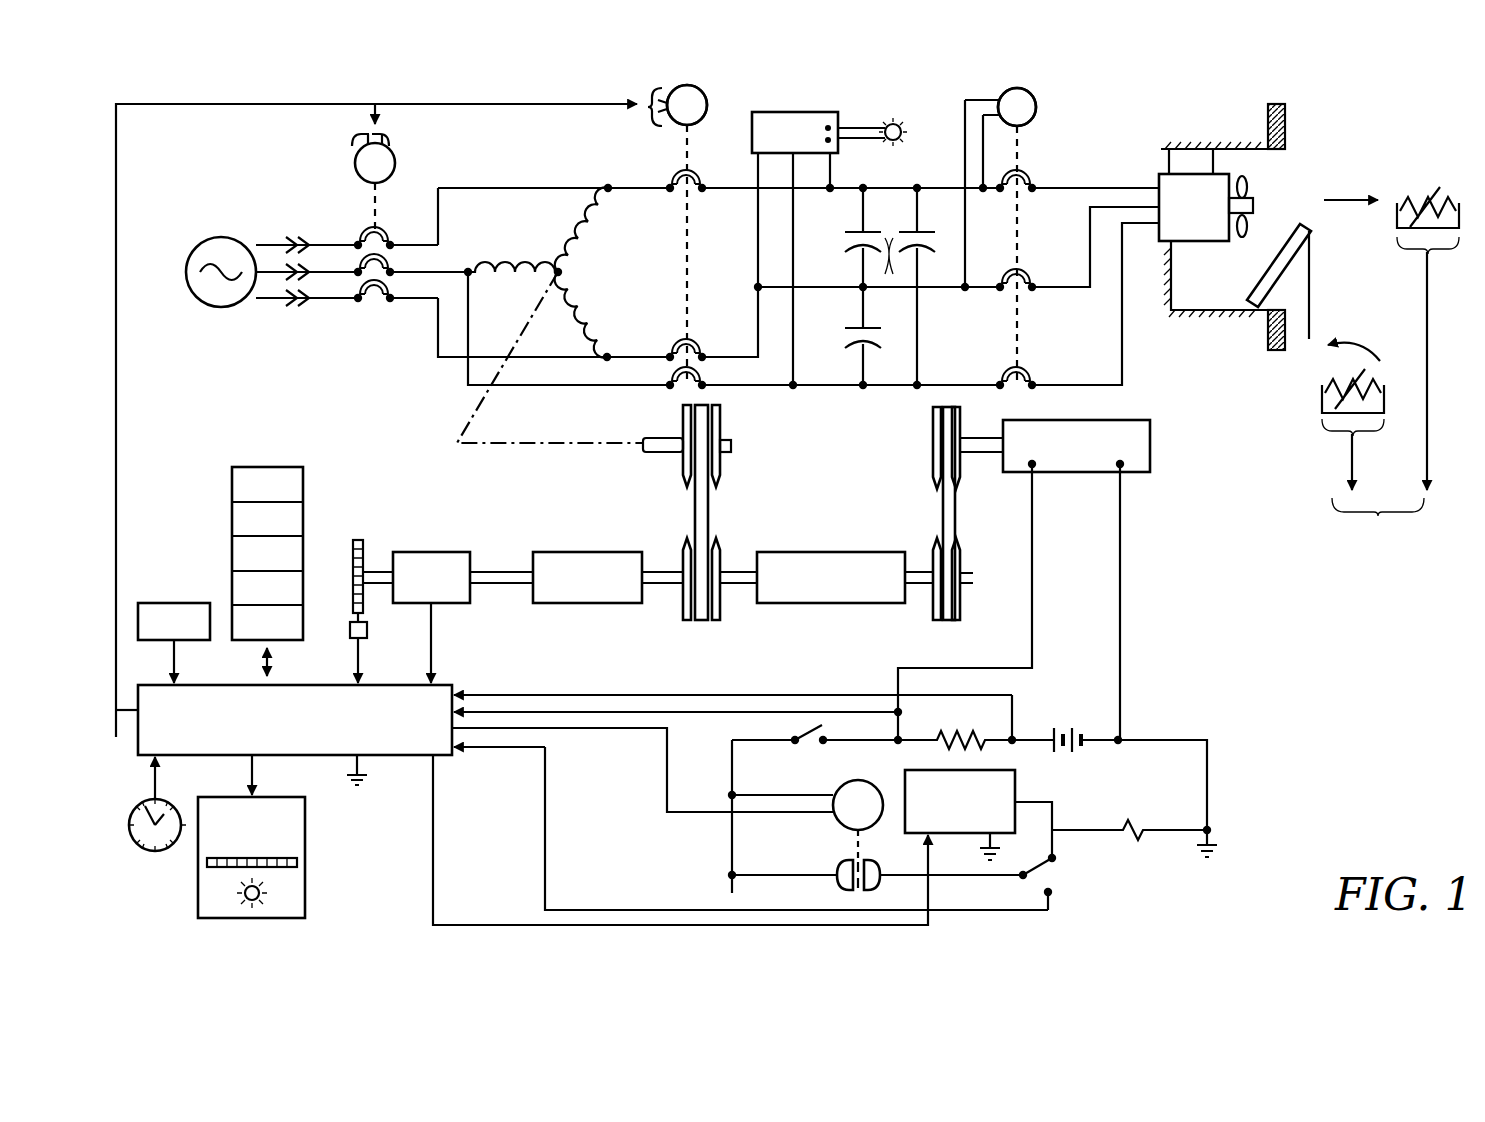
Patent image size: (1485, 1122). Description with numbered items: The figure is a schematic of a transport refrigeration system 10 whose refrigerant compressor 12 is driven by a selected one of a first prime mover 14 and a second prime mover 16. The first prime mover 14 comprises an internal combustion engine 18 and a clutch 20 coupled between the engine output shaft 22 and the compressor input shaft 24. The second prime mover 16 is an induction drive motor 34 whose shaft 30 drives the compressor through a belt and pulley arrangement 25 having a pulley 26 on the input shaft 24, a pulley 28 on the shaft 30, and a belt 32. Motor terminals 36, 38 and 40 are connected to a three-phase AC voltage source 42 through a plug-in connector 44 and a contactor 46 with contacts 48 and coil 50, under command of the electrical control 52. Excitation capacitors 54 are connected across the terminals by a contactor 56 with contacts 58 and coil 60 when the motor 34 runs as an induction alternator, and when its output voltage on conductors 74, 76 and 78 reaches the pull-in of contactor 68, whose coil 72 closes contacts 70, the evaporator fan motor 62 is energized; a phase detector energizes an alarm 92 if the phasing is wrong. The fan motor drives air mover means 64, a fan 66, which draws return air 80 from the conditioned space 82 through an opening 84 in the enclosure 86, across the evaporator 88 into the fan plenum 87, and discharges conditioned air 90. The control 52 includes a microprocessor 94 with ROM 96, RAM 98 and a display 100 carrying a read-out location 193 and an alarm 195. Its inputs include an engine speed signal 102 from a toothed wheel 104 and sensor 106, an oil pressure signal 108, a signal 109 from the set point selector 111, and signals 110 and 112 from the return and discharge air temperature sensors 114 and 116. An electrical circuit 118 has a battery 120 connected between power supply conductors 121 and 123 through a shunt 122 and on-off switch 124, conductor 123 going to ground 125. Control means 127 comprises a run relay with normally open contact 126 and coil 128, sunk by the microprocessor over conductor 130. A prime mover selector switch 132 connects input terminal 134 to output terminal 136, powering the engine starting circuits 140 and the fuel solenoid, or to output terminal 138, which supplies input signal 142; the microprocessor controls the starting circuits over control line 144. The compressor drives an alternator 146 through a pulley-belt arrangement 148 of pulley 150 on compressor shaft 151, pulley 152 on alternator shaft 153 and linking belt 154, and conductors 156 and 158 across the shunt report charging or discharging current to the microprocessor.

The refrigeration system 10 is at (1216, 563).
The refrigerant compressor 12 is at (836, 552).
The first prime mover 14 is at (506, 532).
The second prime mover 16 is at (550, 357).
The internal combustion engine 18 is at (412, 552).
The clutch 20 is at (584, 552).
The output shaft 22 is at (492, 590).
The input shaft 24 is at (738, 570).
The belt and pulley arrangement 25 is at (708, 509).
The pulley 26 is at (689, 544).
The pulley 28 is at (722, 423).
The shaft 30 is at (662, 438).
The belt 32 is at (712, 509).
The induction drive motor 34 is at (553, 252).
The terminal 36 is at (608, 188).
The terminal 38 is at (468, 272).
The terminal 40 is at (607, 357).
The three-phase AC voltage source 42 is at (200, 252).
The plug-in connector 44 is at (294, 236).
The electrical contactor 46 is at (352, 149).
The contacts 48 is at (398, 255).
The electromagnetic coil 50 is at (394, 166).
The refrigerant electrical control 52 is at (521, 772).
The excitation capacitors 54 is at (868, 334).
The contactor 56 is at (701, 104).
The contacts 58 is at (692, 285).
The electromagnetic coil 60 is at (698, 130).
The evaporator fan motor 62 is at (1159, 180).
The air mover means 64 is at (1212, 252).
The fan 66 is at (1254, 220).
The contactor 68 is at (1022, 187).
The contacts 70 is at (1022, 290).
The electromagnetic coil 72 is at (1034, 122).
The output conductor 74 is at (944, 188).
The output conductor 76 is at (947, 287).
The output conductor 78 is at (976, 385).
The return air 80 is at (1370, 360).
The conditioned space 82 is at (1392, 280).
The opening 84 is at (1278, 151).
The enclosure 86 is at (1285, 128).
The fan plenum 87 is at (1230, 320).
The evaporator 88 is at (1270, 262).
The discharge air arrow 90 is at (1346, 198).
The alarm 92 is at (904, 124).
The microprocessor 94 is at (378, 760).
The read-only-memory 96 is at (148, 602).
The random-access-memory 98 is at (258, 466).
The display 100 is at (305, 815).
The engine speed signal 102 is at (358, 669).
The toothed wheel 104 is at (358, 540).
The sensor 106 is at (350, 624).
The oil pressure signal 108 is at (431, 660).
The set point signal 109 is at (160, 774).
The return air temperature signal 110 is at (1348, 460).
The set point temperature selector 111 is at (140, 848).
The discharge air temperature signal 112 is at (1428, 470).
The return air temperature sensor 114 is at (1326, 396).
The discharge air temperature sensor 116 is at (1428, 186).
The electrical circuit 118 is at (1149, 602).
The battery 120 is at (1064, 728).
The power supply conductor 121 is at (732, 850).
The shunt 122 is at (958, 738).
The power supply conductor 123 is at (1208, 786).
The on-off switch 124 is at (822, 732).
The electrical ground 125 is at (1216, 839).
The normally open contact 126 is at (840, 879).
The control means 127 is at (904, 849).
The electromagnetic coil 128 is at (836, 826).
The conductor 130 is at (688, 755).
The prime mover selector switch 132 is at (1050, 880).
The input terminal 134 is at (1022, 880).
The first output terminal 136 is at (1054, 857).
The second output terminal 138 is at (1050, 896).
The engine starting circuits 140 is at (1015, 790).
The input signal 142 is at (458, 763).
The control line 144 is at (446, 921).
The alternator 146 is at (1150, 452).
The pulley-belt arrangement 148 is at (949, 520).
The pulley 150 is at (958, 622).
The compressor shaft 151 is at (920, 587).
The pulley 152 is at (933, 426).
The alternator shaft 153 is at (978, 438).
The linking belt 154 is at (943, 502).
The conductor 156 is at (796, 694).
The conductor 158 is at (802, 712).
The alpha-numeric read-out location 193 is at (297, 862).
The alarm 195 is at (262, 890).